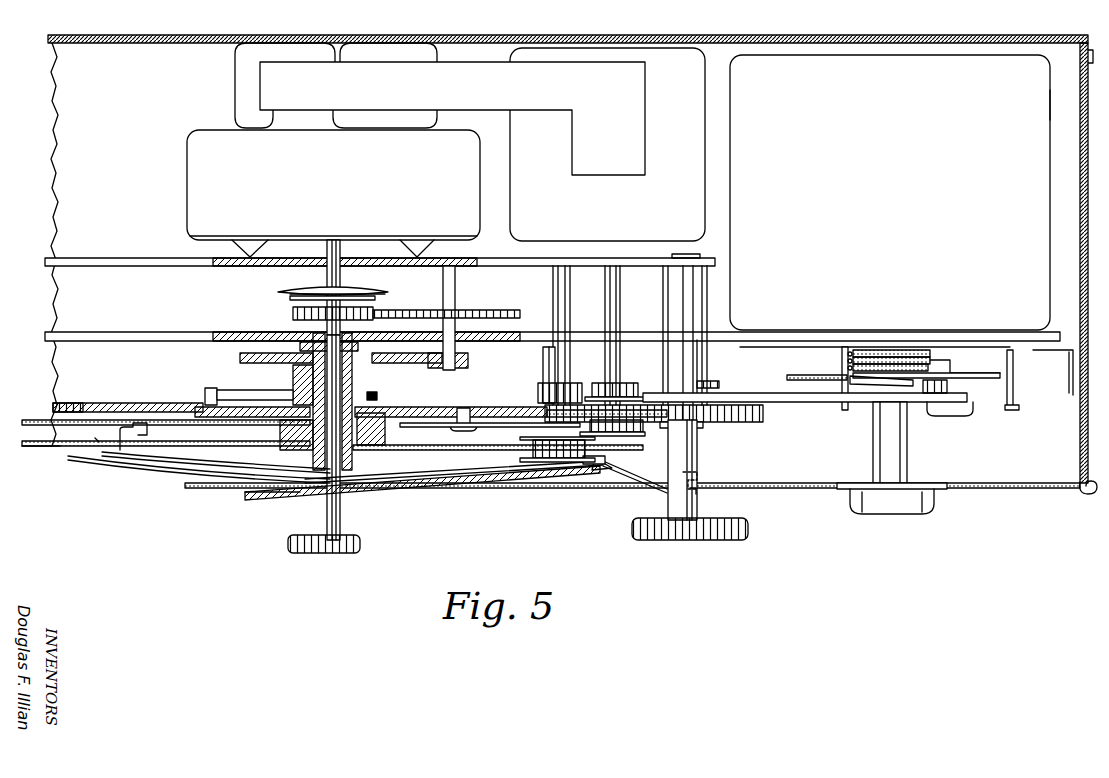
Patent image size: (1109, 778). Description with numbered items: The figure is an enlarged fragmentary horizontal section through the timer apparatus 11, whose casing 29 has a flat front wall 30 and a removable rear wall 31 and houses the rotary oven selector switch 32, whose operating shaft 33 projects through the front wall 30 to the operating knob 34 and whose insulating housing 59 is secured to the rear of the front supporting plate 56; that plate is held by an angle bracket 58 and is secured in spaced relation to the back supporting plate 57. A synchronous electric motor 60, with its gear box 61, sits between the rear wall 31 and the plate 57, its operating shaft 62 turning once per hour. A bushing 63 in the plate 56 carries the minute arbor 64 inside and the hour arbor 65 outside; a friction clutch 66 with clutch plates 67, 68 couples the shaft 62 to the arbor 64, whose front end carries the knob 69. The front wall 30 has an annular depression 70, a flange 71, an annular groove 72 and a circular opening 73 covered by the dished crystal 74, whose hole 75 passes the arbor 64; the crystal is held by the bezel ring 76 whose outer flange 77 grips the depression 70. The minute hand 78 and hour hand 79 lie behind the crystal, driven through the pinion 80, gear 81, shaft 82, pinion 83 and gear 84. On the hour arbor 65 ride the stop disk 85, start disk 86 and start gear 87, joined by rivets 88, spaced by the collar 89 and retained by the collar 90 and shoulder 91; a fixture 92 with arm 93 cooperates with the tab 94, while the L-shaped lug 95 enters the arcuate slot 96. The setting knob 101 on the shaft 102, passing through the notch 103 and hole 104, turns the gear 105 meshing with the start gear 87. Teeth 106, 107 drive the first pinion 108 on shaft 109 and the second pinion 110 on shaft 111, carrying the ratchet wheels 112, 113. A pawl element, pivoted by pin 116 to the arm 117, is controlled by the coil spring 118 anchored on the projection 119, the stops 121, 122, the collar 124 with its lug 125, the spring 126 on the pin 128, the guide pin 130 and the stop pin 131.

The timer apparatus 11 is at (896, 21).
The casing 29 is at (1072, 440).
The front wall 30 is at (768, 484).
The rear wall 31 is at (696, 35).
The oven selector switch 32 is at (896, 169).
The operating shaft 33 is at (905, 462).
The operating knob 34 is at (930, 512).
The front supporting plate 56 is at (108, 330).
The back supporting plate 57 is at (148, 258).
The angle bracket 58 is at (1072, 366).
The enclosing housing 59 is at (1050, 104).
The electric motor 60 is at (234, 85).
The gear box 61 is at (260, 174).
The operating shaft 62 is at (337, 240).
The bushing 63 is at (306, 340).
The minute arbor 64 is at (341, 516).
The hour arbor 65 is at (362, 382).
The friction clutch 66 is at (386, 292).
The clutch plate 67 is at (285, 289).
The clutch plate 68 is at (282, 298).
The knob 69 is at (362, 546).
The annular depression 70 is at (692, 462).
The flange 71 is at (640, 490).
The annular groove 72 is at (605, 466).
The circular opening 73 is at (578, 466).
The crystal 74 is at (466, 485).
The hole 75 is at (320, 496).
The annular ring 76 is at (626, 482).
The outer flange 77 is at (694, 492).
The minute hand 78 is at (146, 466).
The hour hand 79 is at (180, 468).
The pinion 80 is at (366, 310).
The gear 81 is at (506, 310).
The shaft 82 is at (456, 293).
The pinion 83 is at (468, 362).
The gear 84 is at (240, 358).
The stop disk 85 is at (52, 448).
The start disk 86 is at (56, 418).
The start gear 87 is at (100, 403).
The rivets 88 is at (470, 408).
The annular collar 89 is at (438, 440).
The annular collar 90 is at (386, 450).
The annular shoulder 91 is at (378, 410).
The annular fixture 92 is at (296, 392).
The arm 93 is at (205, 392).
The lug 94 is at (212, 392).
The lug 95 is at (130, 425).
The arcuate slot 96 is at (97, 445).
The setting control knob 101 is at (722, 529).
The shaft 102 is at (693, 446).
The notch 103 is at (662, 488).
The hole 104 is at (700, 481).
The gear 105 is at (765, 414).
The teeth 106 is at (26, 446).
The teeth 107 is at (32, 423).
The first pinion 108 is at (542, 462).
The shaft 109 is at (562, 313).
The second pinion 110 is at (626, 420).
The shaft 111 is at (620, 313).
The ratchet wheel 112 is at (540, 393).
The ratchet wheel 113 is at (592, 383).
The pin 116 is at (955, 416).
The arm 117 is at (975, 395).
The coil spring 118 is at (882, 353).
The projection 119 is at (1010, 355).
The stop 121 is at (848, 348).
The stop 122 is at (1014, 408).
The collar 124 is at (790, 376).
The lug 125 is at (876, 386).
The coil spring 126 is at (720, 385).
The pin 128 is at (702, 370).
The guide pin 130 is at (548, 358).
The stop pin 131 is at (672, 350).